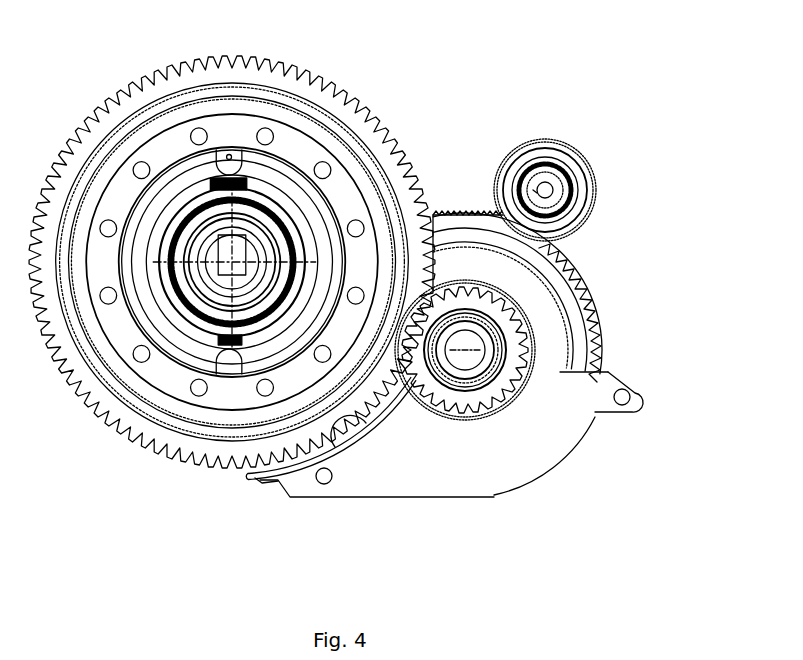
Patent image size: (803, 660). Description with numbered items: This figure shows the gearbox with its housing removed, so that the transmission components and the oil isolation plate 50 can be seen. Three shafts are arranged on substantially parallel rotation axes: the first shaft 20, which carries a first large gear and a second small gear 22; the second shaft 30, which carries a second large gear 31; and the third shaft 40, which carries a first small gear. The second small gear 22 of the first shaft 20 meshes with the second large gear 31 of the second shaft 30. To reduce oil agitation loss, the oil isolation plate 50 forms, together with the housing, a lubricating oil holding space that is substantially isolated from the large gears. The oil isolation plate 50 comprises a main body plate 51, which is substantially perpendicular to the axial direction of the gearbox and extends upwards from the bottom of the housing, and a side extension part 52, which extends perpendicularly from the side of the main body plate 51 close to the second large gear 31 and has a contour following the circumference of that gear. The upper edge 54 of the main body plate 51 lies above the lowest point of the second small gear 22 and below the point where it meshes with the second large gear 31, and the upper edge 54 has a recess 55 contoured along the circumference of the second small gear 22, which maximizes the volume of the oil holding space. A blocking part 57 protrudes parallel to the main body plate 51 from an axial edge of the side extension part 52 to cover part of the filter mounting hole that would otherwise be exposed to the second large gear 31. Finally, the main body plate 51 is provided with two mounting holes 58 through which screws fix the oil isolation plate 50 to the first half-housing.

The first shaft 20 is at (477, 352).
The second small gear 22 is at (521, 328).
The second shaft 30 is at (245, 178).
The second large gear 31 is at (262, 456).
The third shaft 40 is at (545, 190).
The oil isolation plate 50 is at (432, 498).
The main body plate 51 is at (552, 435).
The side extension part 52 is at (292, 478).
The upper edge 54 is at (573, 373).
The recess 55 is at (477, 418).
The blocking part 57 is at (360, 443).
The mounting holes 58 is at (325, 484).